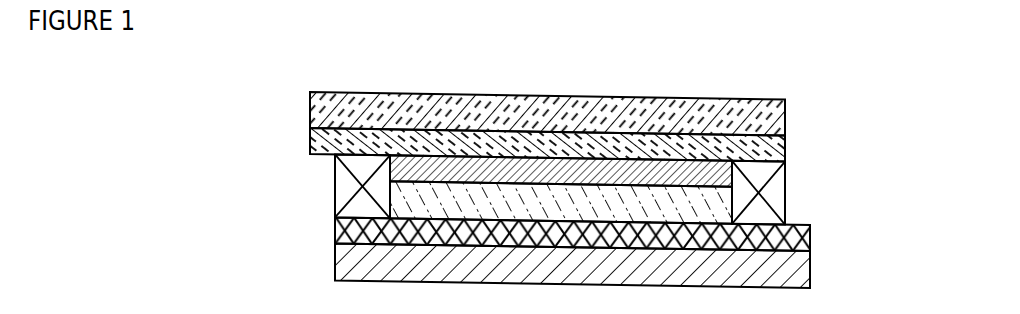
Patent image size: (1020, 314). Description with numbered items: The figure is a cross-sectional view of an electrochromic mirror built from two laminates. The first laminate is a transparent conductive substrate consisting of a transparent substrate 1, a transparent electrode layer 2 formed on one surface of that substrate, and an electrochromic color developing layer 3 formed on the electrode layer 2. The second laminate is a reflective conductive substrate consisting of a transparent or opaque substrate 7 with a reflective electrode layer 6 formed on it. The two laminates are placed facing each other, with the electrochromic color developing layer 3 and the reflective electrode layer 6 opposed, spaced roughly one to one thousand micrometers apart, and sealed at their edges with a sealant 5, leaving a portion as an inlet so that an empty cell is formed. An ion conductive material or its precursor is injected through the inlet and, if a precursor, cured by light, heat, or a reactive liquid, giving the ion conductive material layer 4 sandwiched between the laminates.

The transparent substrate 1 is at (785, 119).
The transparent electrode layer 2 is at (785, 150).
The electrochromic color developing layer 3 is at (785, 176).
The ion conductive material layer 4 is at (785, 203).
The sealant 5 is at (348, 192).
The reflective electrode layer 6 is at (810, 242).
The substrate 7 is at (810, 272).